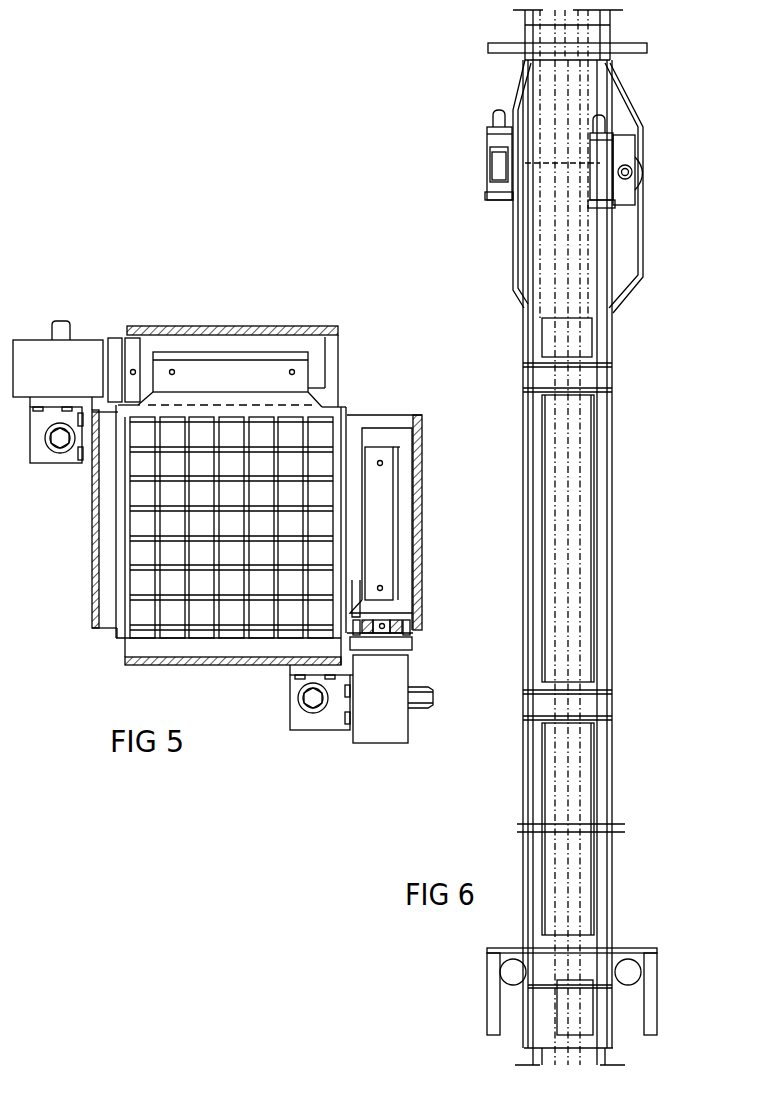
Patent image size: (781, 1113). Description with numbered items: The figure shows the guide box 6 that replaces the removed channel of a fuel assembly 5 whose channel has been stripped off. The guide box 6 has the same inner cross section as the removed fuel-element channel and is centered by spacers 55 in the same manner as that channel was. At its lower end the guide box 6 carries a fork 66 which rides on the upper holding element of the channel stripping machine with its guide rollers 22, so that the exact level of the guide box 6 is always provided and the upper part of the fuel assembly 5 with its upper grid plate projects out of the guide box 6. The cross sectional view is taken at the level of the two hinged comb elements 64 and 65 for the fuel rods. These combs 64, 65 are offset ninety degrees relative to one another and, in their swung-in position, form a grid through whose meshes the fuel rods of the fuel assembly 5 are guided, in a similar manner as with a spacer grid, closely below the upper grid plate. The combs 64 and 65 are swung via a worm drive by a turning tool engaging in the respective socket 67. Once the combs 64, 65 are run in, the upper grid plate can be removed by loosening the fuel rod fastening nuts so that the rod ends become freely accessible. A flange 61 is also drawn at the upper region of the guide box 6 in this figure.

In FIG. 6, the fuel assembly 5 is at (558, 606).
In FIG. 6, the guide box 6 is at (513, 300).
In FIG. 6, the guide rollers 22 is at (500, 970).
In FIG. 6, the spacers 55 is at (596, 378).
In FIG. 6, the flange 61 is at (490, 47).
In FIG. 5, the hinged comb element 64 is at (355, 450).
In FIG. 5, the hinged comb element 65 is at (302, 397).
In FIG. 6, the fork 66 is at (493, 1006).
In FIG. 5, the socket 67 is at (66, 448).
In FIG. 6, the socket 67 is at (497, 125).